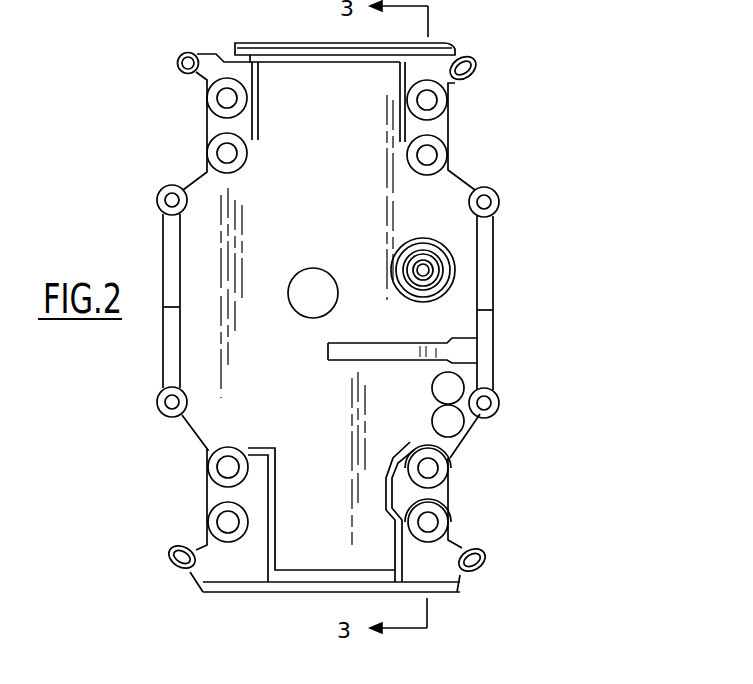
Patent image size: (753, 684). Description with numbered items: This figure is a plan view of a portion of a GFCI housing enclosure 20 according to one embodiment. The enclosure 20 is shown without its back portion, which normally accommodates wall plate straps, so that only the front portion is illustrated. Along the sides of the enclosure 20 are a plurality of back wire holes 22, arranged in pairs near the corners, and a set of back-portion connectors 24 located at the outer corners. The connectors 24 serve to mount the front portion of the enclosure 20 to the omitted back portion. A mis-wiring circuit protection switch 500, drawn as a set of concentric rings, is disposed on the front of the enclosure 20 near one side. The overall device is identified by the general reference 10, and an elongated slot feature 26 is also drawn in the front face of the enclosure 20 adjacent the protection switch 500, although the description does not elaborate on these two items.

The bracket assembly 10 is at (572, 63).
The GFCI housing enclosure 20 is at (443, 193).
The back wire holes 22 is at (215, 100).
The back-portion connectors 24 is at (178, 55).
The slot 26 is at (443, 325).
The mis-wiring circuit protection switch 500 is at (440, 275).